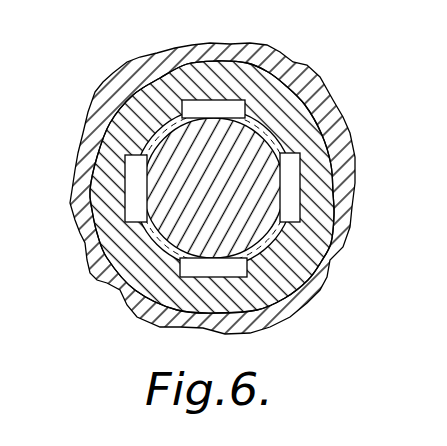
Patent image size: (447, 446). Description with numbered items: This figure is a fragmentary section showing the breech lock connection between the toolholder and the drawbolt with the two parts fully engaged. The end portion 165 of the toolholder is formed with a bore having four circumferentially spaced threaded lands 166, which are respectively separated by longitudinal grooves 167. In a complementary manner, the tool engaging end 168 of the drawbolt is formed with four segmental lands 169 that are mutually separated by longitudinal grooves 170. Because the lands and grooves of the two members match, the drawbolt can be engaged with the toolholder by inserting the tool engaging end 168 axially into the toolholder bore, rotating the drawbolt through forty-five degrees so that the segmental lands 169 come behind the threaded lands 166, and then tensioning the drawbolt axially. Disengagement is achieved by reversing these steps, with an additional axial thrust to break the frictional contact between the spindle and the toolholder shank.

The end portion of the toolholder 165 is at (252, 86).
The threaded lands 166 is at (245, 247).
The longitudinal grooves 167 is at (132, 182).
The tool engaging end of the drawbolt 168 is at (173, 148).
The segmental lands 169 is at (265, 236).
The longitudinal grooves 170 is at (208, 117).